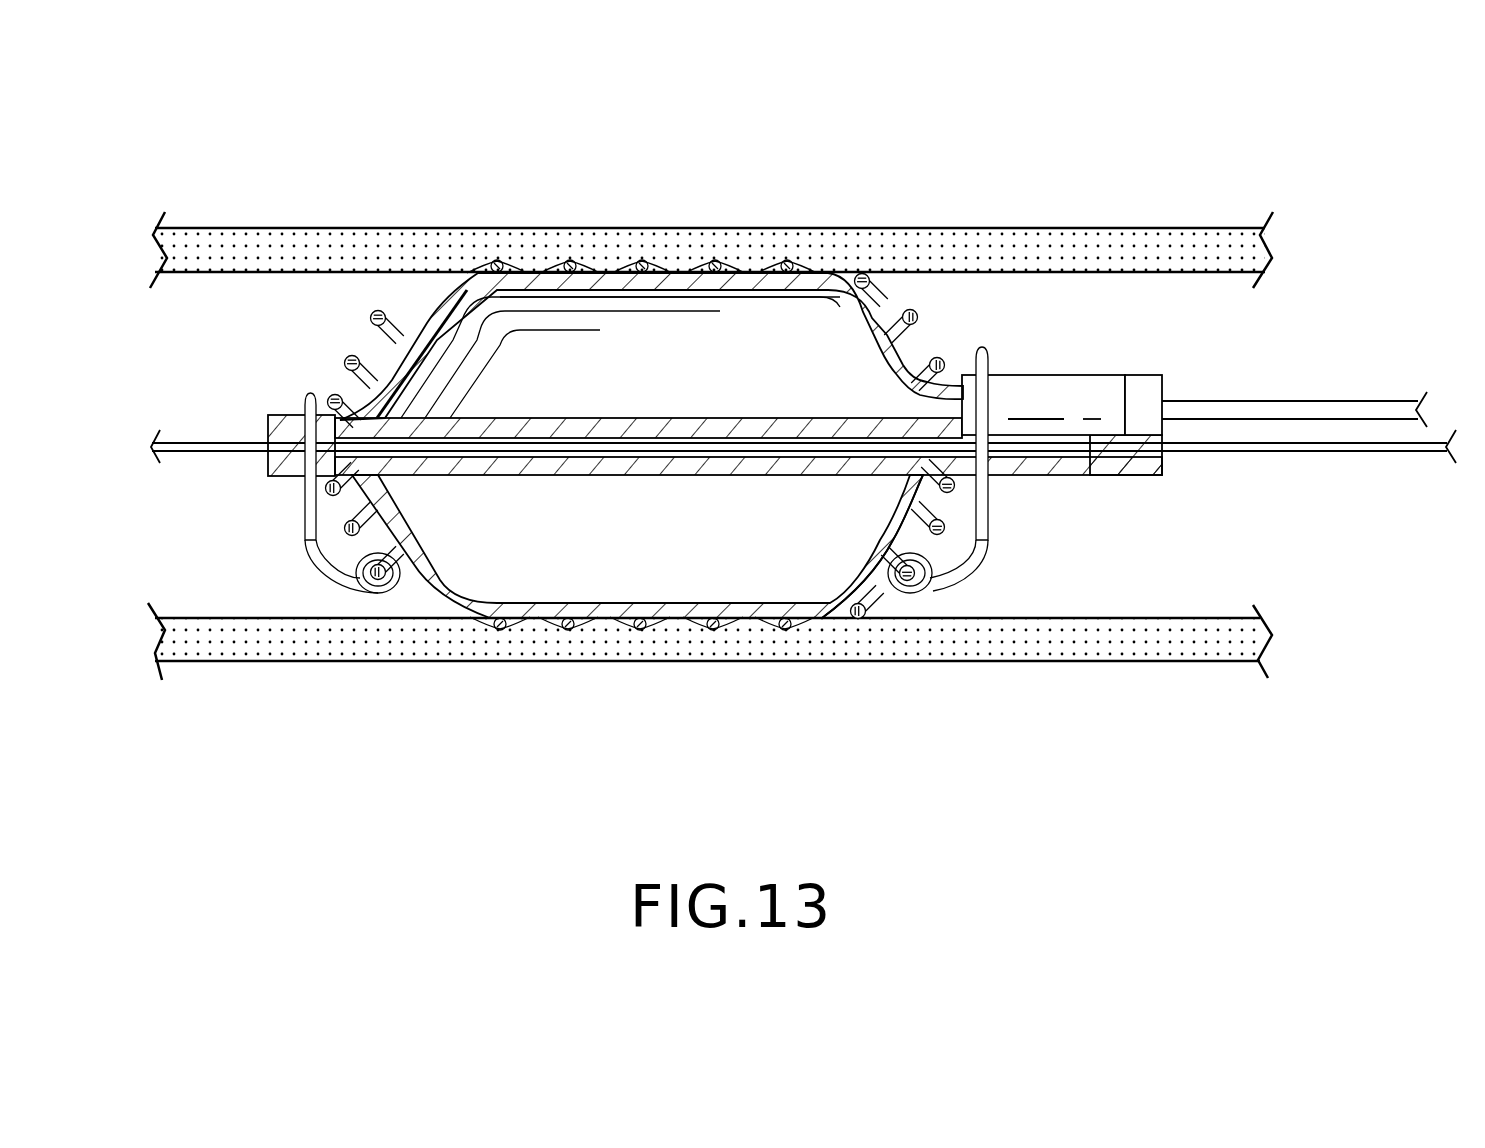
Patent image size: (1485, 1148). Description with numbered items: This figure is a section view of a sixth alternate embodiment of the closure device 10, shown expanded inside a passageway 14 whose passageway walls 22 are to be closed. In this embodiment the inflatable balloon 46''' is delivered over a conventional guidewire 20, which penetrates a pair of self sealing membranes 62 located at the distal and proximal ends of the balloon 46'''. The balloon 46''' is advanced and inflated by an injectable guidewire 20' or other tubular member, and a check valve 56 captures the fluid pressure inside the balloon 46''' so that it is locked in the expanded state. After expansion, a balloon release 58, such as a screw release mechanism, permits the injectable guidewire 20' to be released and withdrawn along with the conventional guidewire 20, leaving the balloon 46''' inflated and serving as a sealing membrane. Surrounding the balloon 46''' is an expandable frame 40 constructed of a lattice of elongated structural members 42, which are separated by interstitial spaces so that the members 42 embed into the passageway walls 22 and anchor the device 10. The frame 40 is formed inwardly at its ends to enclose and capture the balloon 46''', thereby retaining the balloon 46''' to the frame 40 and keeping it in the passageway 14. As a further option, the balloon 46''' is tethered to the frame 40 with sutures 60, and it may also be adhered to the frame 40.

The closure device 10 is at (410, 592).
The passageway 14 is at (250, 323).
The conventional guidewire 20 is at (803, 532).
The injectable guidewire 20' is at (1312, 345).
The passageway walls 22 is at (1030, 228).
The expandable frame 40 is at (371, 300).
The elongated structural members 42 is at (645, 260).
The inflatable balloon 46''' is at (883, 639).
The check valve 56 is at (1078, 375).
The balloon release 58 is at (1150, 385).
The sutures 60 is at (305, 547).
The self sealing membranes 62 is at (276, 428).